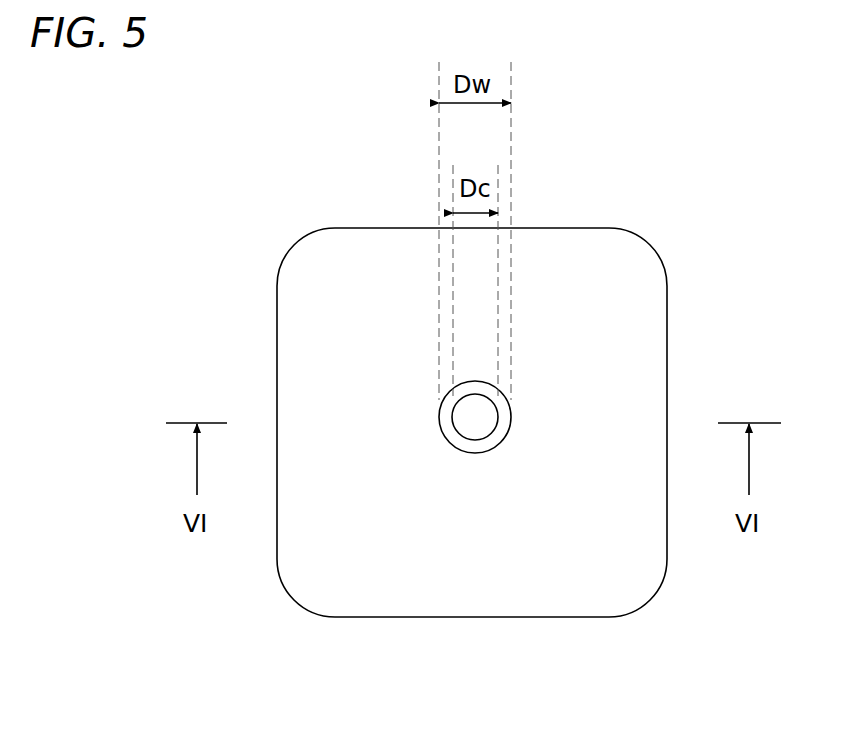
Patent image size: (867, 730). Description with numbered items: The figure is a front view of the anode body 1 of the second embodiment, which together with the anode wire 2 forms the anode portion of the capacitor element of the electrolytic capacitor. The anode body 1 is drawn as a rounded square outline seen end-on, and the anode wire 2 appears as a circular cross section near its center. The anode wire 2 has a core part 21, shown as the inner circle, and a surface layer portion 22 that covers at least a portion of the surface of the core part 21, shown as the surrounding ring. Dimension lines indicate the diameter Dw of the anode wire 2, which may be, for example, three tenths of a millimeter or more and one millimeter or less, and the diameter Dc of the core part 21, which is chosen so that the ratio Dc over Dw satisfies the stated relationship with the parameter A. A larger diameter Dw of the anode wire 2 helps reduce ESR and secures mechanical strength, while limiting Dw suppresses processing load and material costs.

The anode body 1 is at (623, 322).
The anode wire 2 is at (453, 458).
The core part 21 is at (477, 425).
The surface layer portion 22 is at (505, 432).